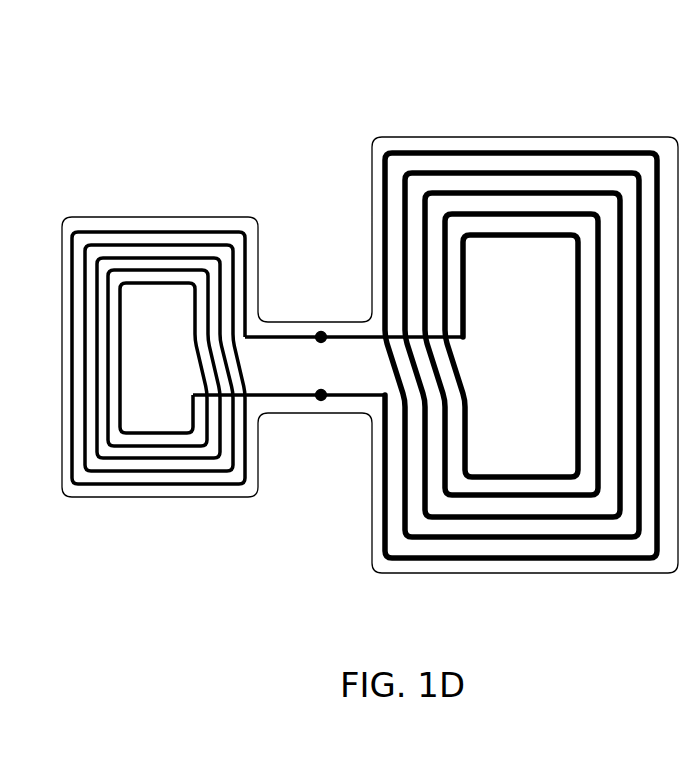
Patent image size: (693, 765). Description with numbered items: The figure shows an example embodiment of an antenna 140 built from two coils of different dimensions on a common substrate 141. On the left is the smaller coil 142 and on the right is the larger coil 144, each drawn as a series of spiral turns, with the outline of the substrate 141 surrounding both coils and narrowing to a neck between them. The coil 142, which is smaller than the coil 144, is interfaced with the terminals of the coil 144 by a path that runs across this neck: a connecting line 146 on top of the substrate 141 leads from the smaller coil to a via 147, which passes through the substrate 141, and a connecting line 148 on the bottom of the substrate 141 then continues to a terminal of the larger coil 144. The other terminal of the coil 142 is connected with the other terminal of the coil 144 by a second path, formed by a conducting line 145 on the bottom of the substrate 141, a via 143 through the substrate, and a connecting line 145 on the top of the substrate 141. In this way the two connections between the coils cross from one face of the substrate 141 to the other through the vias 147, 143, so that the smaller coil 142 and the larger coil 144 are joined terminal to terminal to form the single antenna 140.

The antenna 140 is at (158, 309).
The substrate 141 is at (521, 305).
The coil 142 is at (88, 470).
The via 143 is at (298, 395).
The coil 144 is at (438, 503).
The connecting line 145 is at (268, 397).
The connecting line 146 is at (282, 333).
The via 147 is at (318, 333).
The connecting line 148 is at (359, 332).